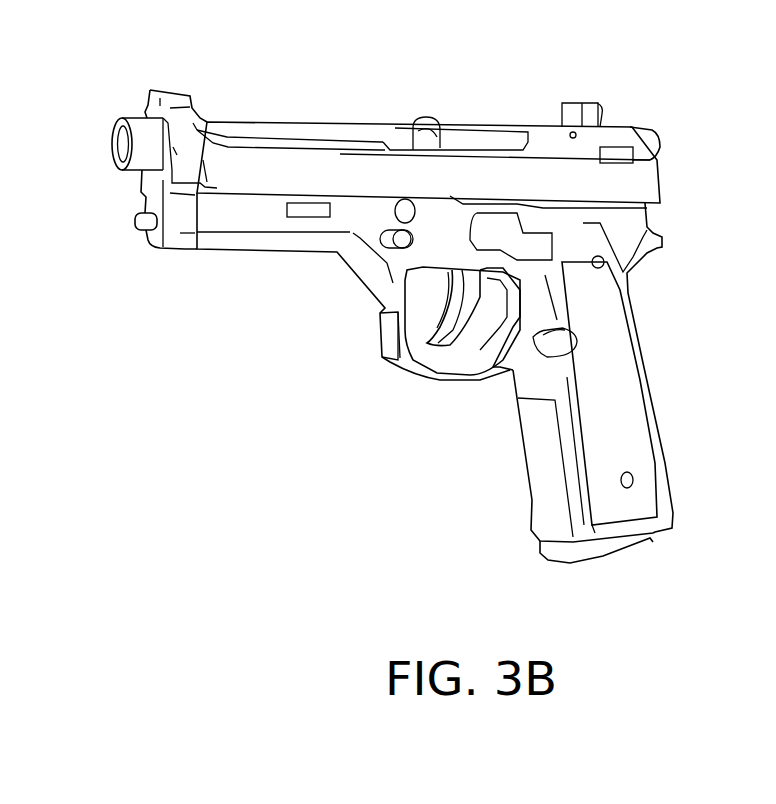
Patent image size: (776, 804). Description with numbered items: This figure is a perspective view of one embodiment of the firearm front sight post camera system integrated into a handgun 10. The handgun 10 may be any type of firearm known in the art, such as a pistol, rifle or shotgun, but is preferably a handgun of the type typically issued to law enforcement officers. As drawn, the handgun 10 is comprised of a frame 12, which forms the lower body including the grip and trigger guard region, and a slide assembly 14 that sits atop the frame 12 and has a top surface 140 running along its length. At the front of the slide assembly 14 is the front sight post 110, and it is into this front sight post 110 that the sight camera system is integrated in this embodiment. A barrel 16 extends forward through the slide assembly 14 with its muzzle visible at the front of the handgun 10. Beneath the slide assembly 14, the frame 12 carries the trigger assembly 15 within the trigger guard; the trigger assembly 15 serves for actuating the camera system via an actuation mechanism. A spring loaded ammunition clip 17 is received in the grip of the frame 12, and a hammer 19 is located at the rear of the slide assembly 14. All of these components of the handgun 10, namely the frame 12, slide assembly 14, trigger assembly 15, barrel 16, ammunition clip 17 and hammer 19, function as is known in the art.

The handgun 10 is at (492, 98).
The frame 12 is at (385, 263).
The slide assembly 14 is at (325, 166).
The trigger assembly 15 is at (435, 348).
The barrel 16 is at (113, 128).
The spring loaded ammunition clip 17 is at (607, 557).
The hammer 19 is at (655, 130).
The front sight post 110 is at (177, 87).
The top surface 140 is at (233, 124).